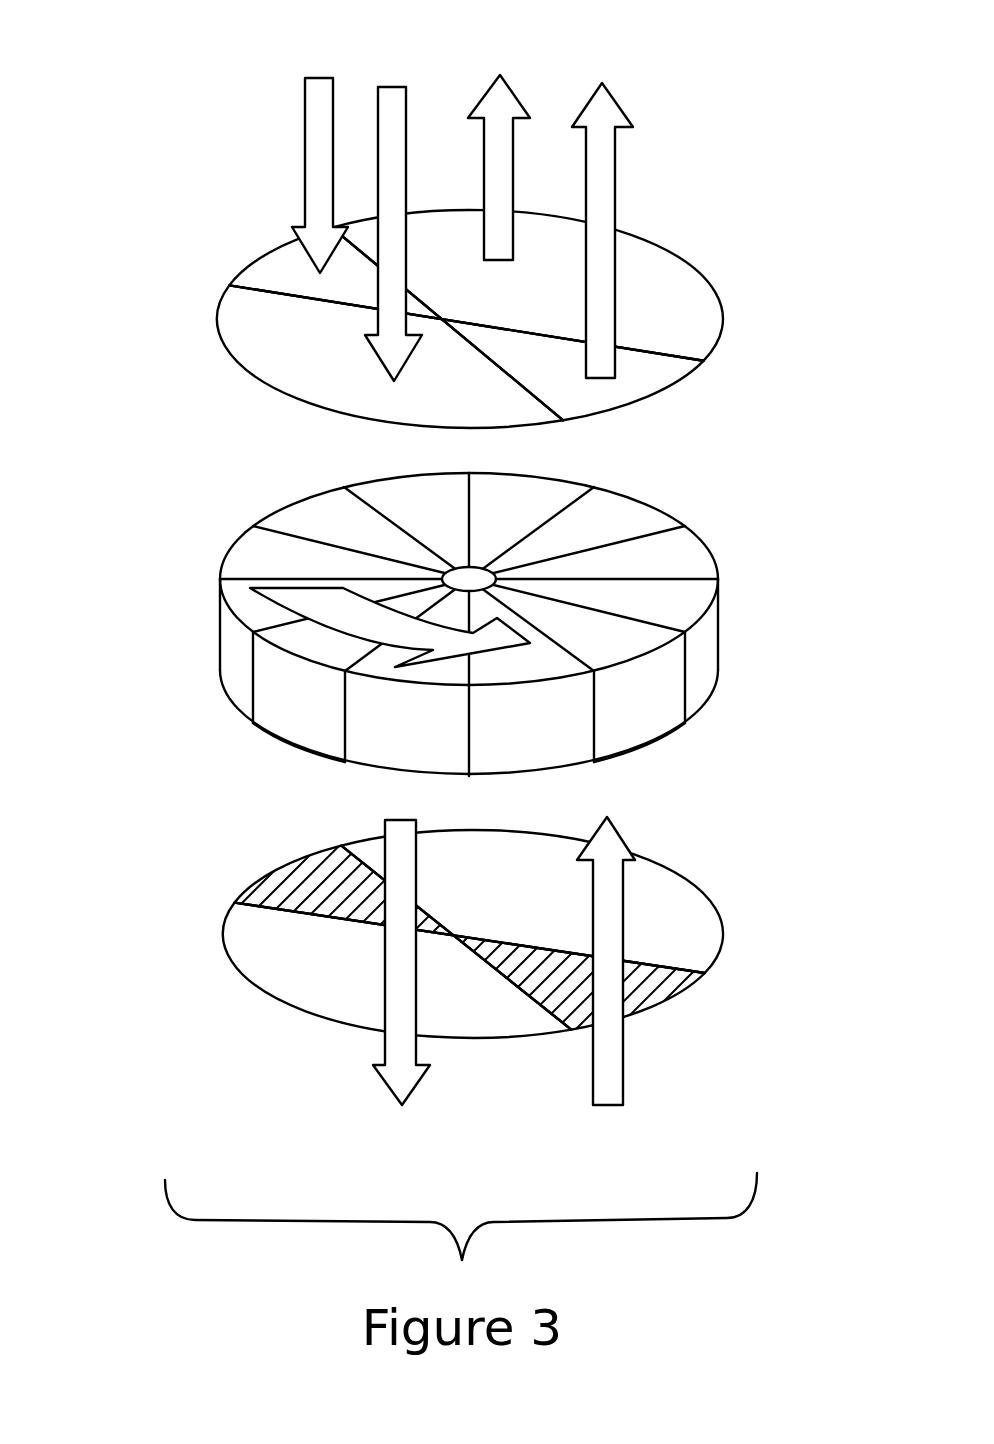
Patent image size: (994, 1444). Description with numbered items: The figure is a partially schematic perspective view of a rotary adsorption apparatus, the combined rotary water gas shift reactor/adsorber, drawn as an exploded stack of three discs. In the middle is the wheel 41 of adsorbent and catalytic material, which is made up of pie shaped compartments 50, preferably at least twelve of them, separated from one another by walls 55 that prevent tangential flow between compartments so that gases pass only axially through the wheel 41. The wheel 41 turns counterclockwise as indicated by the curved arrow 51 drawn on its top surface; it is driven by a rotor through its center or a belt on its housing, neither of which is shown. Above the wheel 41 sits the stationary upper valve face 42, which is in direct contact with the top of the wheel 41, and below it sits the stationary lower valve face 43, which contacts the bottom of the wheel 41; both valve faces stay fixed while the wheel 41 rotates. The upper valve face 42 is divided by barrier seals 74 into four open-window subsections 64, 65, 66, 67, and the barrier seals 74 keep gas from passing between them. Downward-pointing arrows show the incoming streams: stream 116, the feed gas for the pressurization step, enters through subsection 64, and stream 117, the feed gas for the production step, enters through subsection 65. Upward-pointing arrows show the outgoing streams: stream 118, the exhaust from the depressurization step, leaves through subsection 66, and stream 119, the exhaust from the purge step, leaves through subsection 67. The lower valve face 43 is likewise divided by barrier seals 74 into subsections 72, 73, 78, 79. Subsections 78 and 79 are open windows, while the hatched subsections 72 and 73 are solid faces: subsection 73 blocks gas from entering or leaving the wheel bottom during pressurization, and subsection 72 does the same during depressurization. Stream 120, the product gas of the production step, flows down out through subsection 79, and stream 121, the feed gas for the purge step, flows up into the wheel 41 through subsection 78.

The wheel 41 is at (455, 642).
The upper valve face 42 is at (395, 300).
The lower valve face 43 is at (480, 925).
The pie shaped compartments 50 is at (292, 712).
The arrow 51 is at (328, 605).
The walls 55 is at (612, 727).
The subsection 64 is at (287, 272).
The subsection 65 is at (310, 360).
The subsection 66 is at (536, 360).
The subsection 67 is at (660, 285).
The subsection 72 is at (620, 958).
The subsection 73 is at (285, 893).
The barrier seals 74 is at (560, 408).
The subsection 78 is at (492, 897).
The subsection 79 is at (302, 980).
The stream 116 is at (320, 80).
The stream 117 is at (393, 90).
The stream 118 is at (606, 100).
The stream 119 is at (510, 78).
The stream 120 is at (388, 1092).
The stream 121 is at (610, 1100).